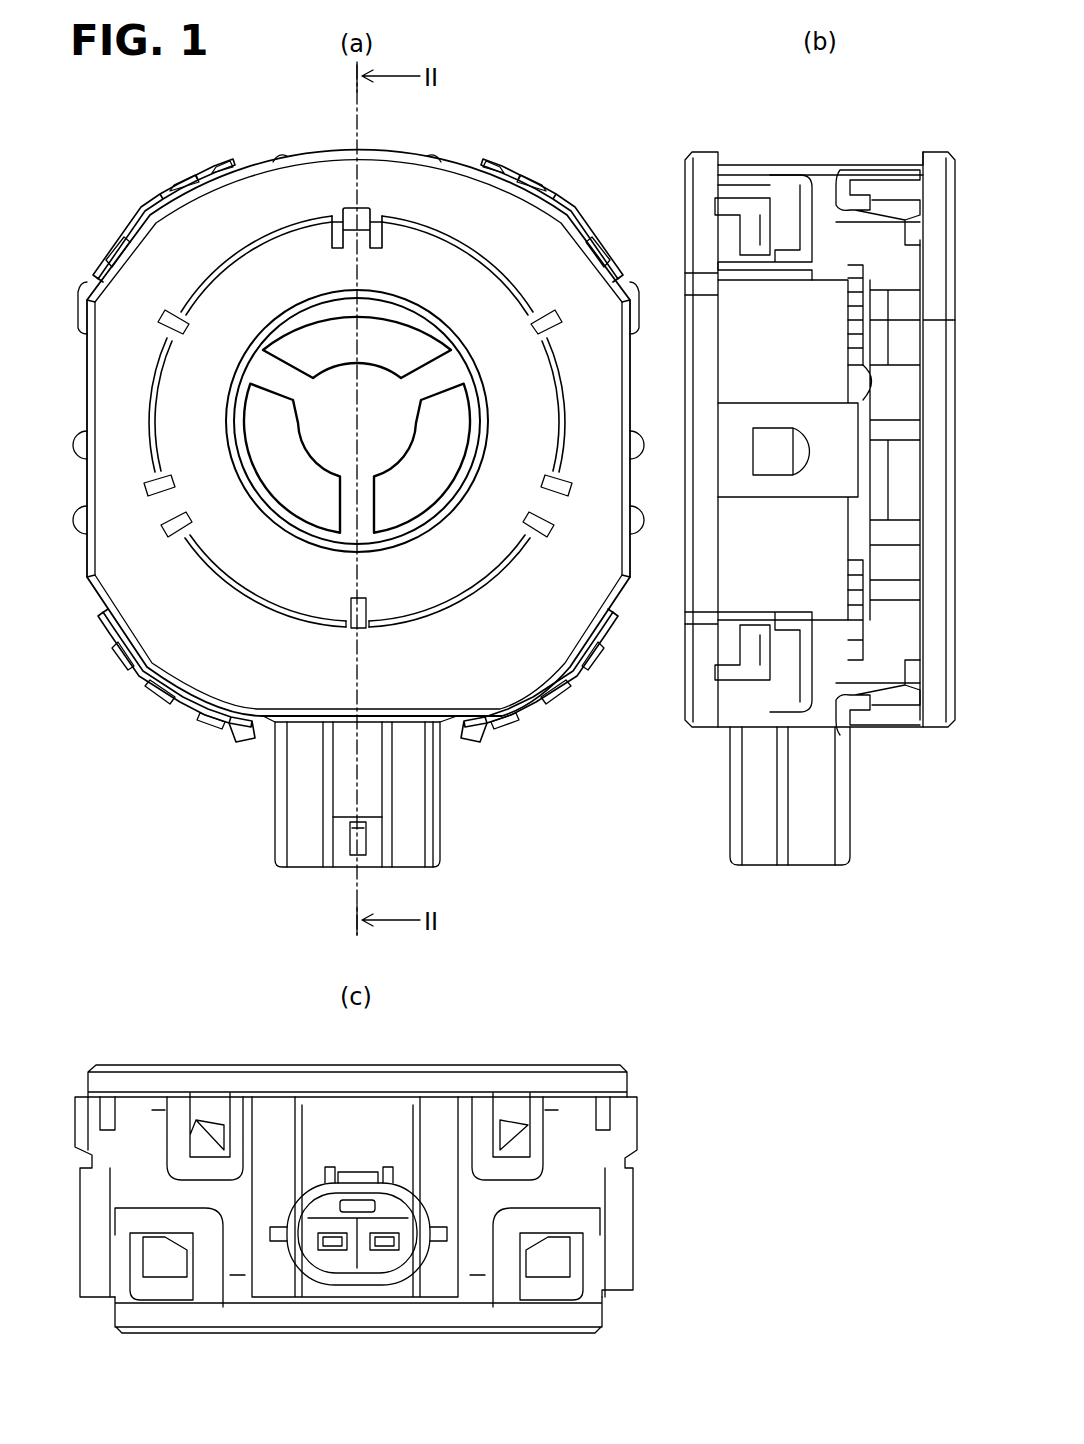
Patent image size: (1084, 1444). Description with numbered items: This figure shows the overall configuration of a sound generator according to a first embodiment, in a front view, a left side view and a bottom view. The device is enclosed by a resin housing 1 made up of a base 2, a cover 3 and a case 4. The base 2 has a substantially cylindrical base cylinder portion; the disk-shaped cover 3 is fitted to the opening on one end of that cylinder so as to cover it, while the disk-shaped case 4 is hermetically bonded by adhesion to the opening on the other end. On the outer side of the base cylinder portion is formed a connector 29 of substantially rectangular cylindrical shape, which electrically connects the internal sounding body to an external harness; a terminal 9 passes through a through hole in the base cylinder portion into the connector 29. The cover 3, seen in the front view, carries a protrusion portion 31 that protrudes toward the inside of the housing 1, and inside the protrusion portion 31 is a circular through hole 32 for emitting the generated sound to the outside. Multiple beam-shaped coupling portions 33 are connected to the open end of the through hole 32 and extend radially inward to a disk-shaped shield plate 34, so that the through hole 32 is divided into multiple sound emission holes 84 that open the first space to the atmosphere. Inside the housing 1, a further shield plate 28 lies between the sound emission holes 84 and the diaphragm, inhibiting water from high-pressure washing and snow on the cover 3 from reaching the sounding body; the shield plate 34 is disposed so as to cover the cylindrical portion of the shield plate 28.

The housing 1 is at (929, 137).
The base 2 is at (822, 187).
The cover 3 is at (297, 138).
The case 4 is at (700, 175).
The terminal 9 is at (383, 1233).
The shield plate 28 is at (410, 474).
The connector 29 is at (413, 797).
The protrusion portion 31 is at (527, 381).
The through hole 32 is at (262, 338).
The coupling portion 33 is at (434, 376).
The shield plate 34 is at (373, 395).
The sound emission hole 84 is at (322, 343).